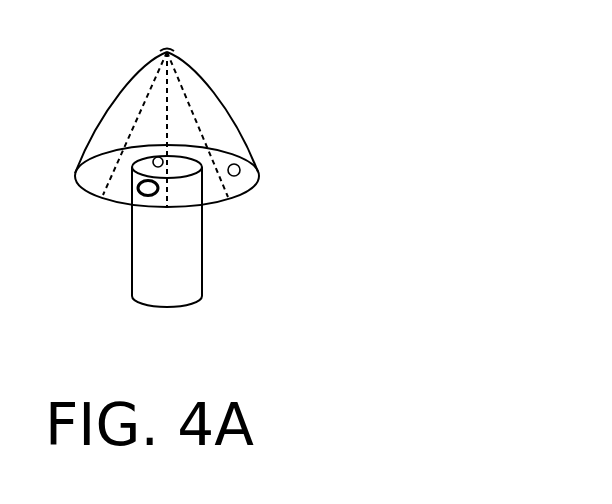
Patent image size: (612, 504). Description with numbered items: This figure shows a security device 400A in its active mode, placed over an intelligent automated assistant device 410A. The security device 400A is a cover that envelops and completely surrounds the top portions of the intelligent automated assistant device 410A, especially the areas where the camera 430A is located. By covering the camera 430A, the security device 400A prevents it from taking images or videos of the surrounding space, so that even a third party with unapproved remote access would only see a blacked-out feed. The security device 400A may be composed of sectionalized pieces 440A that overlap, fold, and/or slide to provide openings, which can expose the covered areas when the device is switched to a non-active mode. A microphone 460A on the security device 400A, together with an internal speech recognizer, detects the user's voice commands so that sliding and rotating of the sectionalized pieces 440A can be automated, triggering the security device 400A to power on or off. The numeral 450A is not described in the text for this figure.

The security device 400A is at (258, 176).
The intelligent automated assistant device 410A is at (203, 228).
The camera 430A is at (151, 179).
The sectionalized pieces 440A is at (117, 122).
The small hole 450A is at (162, 159).
The microphone 460A is at (250, 160).